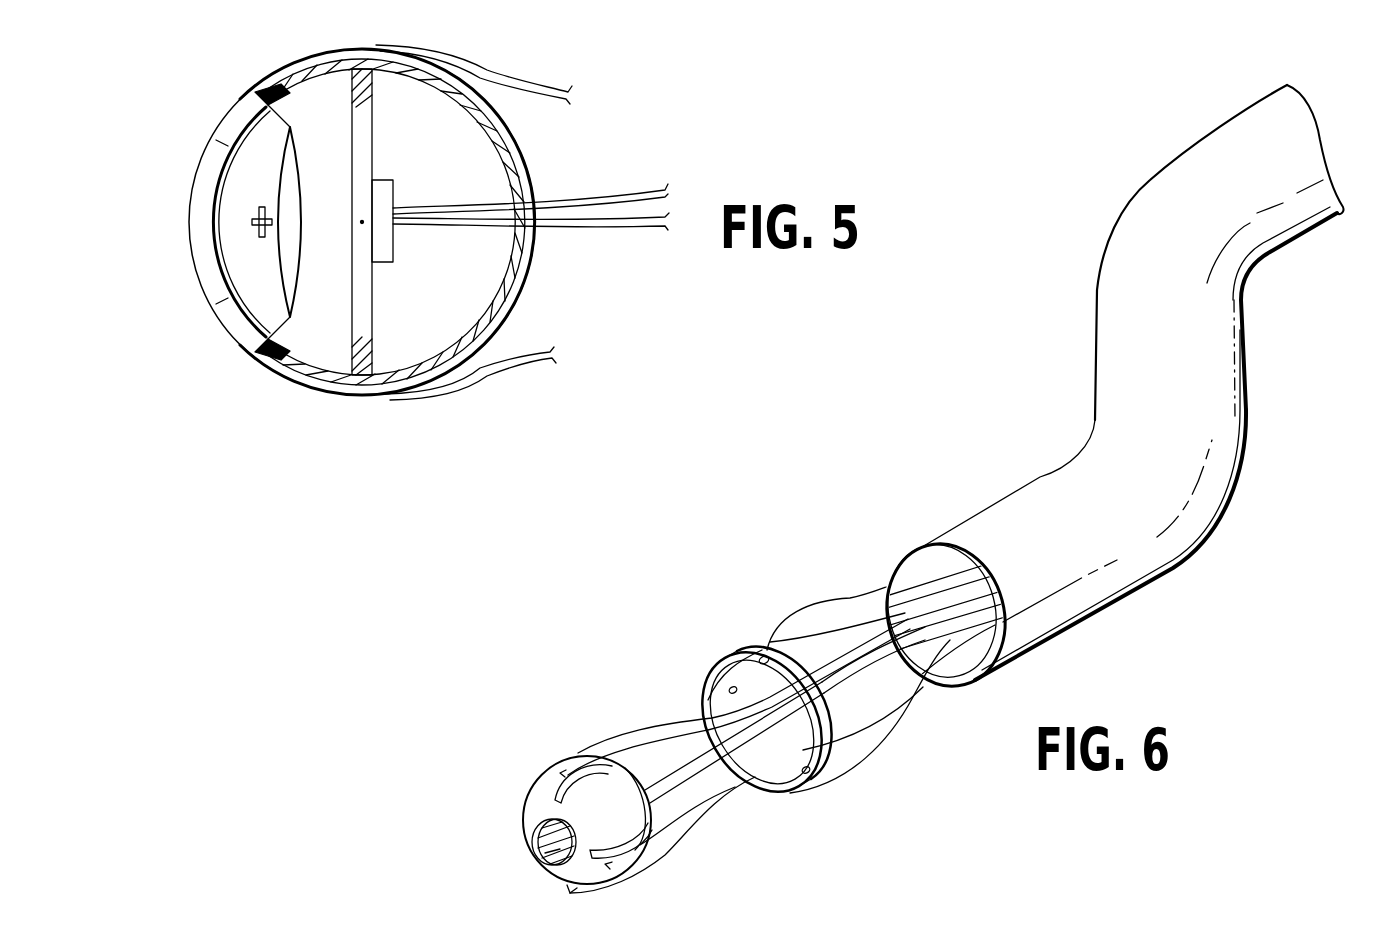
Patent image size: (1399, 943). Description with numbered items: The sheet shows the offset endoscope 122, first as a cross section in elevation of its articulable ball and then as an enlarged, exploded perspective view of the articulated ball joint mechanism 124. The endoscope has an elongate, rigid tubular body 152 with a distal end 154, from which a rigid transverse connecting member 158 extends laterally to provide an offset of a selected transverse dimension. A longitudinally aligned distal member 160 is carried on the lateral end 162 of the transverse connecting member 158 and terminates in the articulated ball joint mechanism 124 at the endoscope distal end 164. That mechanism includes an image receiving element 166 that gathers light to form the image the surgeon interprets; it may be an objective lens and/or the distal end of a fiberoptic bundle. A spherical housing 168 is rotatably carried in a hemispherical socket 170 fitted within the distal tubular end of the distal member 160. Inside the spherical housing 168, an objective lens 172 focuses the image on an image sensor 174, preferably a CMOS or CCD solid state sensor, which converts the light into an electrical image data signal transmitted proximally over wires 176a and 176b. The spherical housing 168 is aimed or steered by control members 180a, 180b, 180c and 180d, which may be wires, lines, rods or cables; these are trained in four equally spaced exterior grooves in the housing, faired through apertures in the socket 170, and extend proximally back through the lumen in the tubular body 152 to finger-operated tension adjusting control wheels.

In FIG. 6, the offset endoscope 122 is at (1003, 328).
In FIG. 6, the articulated ball joint mechanism 124 is at (654, 698).
In FIG. 6, the tubular body 152 is at (1297, 155).
In FIG. 6, the distal end 154 is at (1162, 230).
In FIG. 6, the transverse connecting member 158 is at (1183, 376).
In FIG. 6, the distal member 160 is at (1017, 537).
In FIG. 6, the lateral end 162 is at (1190, 505).
In FIG. 6, the endoscope distal end 164 is at (787, 810).
In FIG. 6, the image receiving element 166 is at (550, 852).
In FIG. 5, the spherical housing 168 is at (510, 160).
In FIG. 6, the spherical housing 168 is at (530, 800).
In FIG. 6, the hemispherical socket 170 is at (760, 655).
In FIG. 5, the objective lens 172 is at (270, 186).
In FIG. 6, the objective lens 172 is at (545, 838).
In FIG. 5, the image sensor 174 is at (355, 265).
In FIG. 5, the wire 176a is at (600, 213).
In FIG. 5, the wire 176b is at (592, 230).
In FIG. 5, the control member 180a is at (530, 85).
In FIG. 6, the control member 180a is at (833, 601).
In FIG. 6, the control member 180b is at (913, 700).
In FIG. 5, the control member 180c is at (481, 372).
In FIG. 6, the control member 180c is at (823, 790).
In FIG. 6, the control member 180d is at (703, 680).